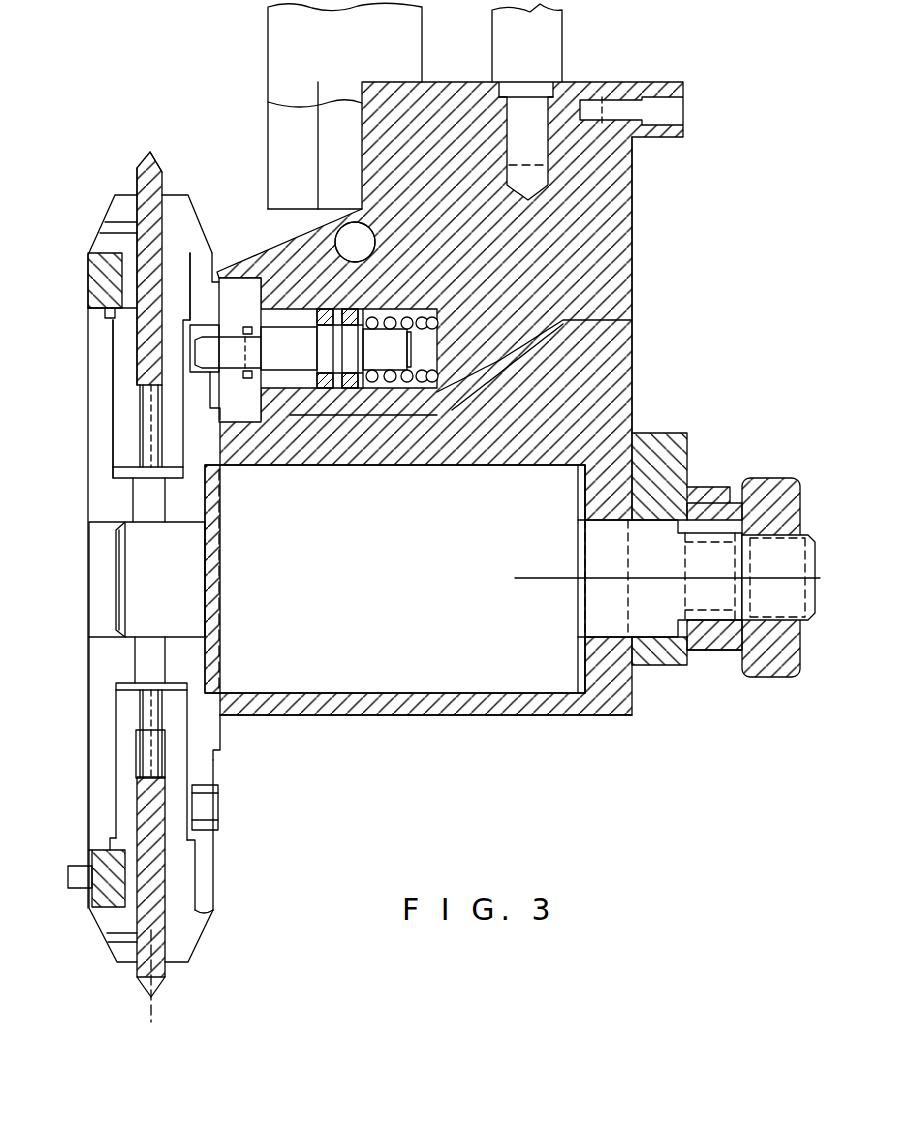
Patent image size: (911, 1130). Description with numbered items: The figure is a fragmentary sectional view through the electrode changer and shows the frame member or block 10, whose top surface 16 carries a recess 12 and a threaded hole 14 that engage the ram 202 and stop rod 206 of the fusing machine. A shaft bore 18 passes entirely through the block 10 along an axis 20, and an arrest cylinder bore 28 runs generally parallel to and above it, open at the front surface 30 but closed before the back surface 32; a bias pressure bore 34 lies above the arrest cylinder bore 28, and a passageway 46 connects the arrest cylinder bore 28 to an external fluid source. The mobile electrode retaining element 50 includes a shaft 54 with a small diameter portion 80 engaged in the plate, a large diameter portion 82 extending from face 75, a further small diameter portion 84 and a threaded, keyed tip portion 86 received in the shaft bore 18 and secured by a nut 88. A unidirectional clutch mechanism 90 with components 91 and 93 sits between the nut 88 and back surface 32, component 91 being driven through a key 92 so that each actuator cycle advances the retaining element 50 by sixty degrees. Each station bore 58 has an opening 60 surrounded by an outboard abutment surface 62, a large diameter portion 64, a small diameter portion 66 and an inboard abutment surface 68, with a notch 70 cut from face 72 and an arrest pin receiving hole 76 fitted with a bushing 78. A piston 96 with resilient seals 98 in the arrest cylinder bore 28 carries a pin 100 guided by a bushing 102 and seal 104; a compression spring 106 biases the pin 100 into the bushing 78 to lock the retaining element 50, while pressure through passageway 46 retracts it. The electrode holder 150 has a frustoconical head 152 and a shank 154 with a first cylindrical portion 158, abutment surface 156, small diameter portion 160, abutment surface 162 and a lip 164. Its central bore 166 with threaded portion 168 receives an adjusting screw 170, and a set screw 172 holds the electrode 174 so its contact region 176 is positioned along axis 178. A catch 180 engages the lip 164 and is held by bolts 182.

The block 10 is at (634, 368).
The recess 12 is at (270, 102).
The threaded hole 14 is at (540, 100).
The top surface 16 is at (615, 82).
The shaft bore 18 is at (495, 698).
The axis 20 is at (515, 578).
The arrest cylinder bore 28 is at (445, 312).
The front surface 30 is at (218, 277).
The back surface 32 is at (632, 398).
The bias pressure bore 34 is at (375, 240).
The passageway 46 is at (633, 320).
The mobile electrode retaining element 50 is at (89, 682).
The shaft 54 is at (125, 580).
The bore 58 is at (110, 812).
The opening 60 is at (200, 895).
The outboard abutment surface 62 is at (215, 902).
The large diameter portion 64 is at (200, 870).
The small diameter portion 66 is at (190, 765).
The inboard abutment surface 68 is at (215, 832).
The notch 70 is at (92, 880).
The face 72 is at (360, 717).
The face 75 is at (222, 735).
The arrest pin receiving hole 76 is at (220, 790).
The bushing 78 is at (220, 800).
The small diameter portion 80 is at (125, 540).
The large diameter portion 82 is at (556, 665).
The small diameter portion 84 is at (650, 630).
The tip portion 86 is at (800, 612).
The nut 88 is at (770, 675).
The unidirectional clutch mechanism 90 is at (693, 665).
The clutch component 91 is at (725, 652).
The key 92 is at (720, 503).
The clutch component 93 is at (650, 433).
The piston 96 is at (330, 312).
The resilient seals 98 is at (352, 312).
The pin 100 is at (200, 360).
The bushing 102 is at (270, 380).
The resilient seal 104 is at (298, 390).
The compression spring 106 is at (438, 362).
The electrode holder 150 is at (115, 190).
The head 152 is at (105, 236).
The shank 154 is at (122, 388).
The abutment surface 156 is at (190, 195).
The first cylindrical portion 158 is at (112, 330).
The small diameter cylindrical portion 160 is at (117, 445).
The abutment surface 162 is at (190, 320).
The lip 164 is at (105, 285).
The central bore 166 is at (133, 190).
The threaded portion 168 is at (190, 458).
The adjusting screw 170 is at (195, 472).
The set screw 172 is at (108, 215).
The electrode 174 is at (140, 168).
The contact region 176 is at (157, 165).
The axis 178 is at (155, 1007).
The catch 180 is at (105, 938).
The bolts 182 is at (97, 908).
The ram 202 is at (414, 26).
The stop rod 206 is at (548, 40).